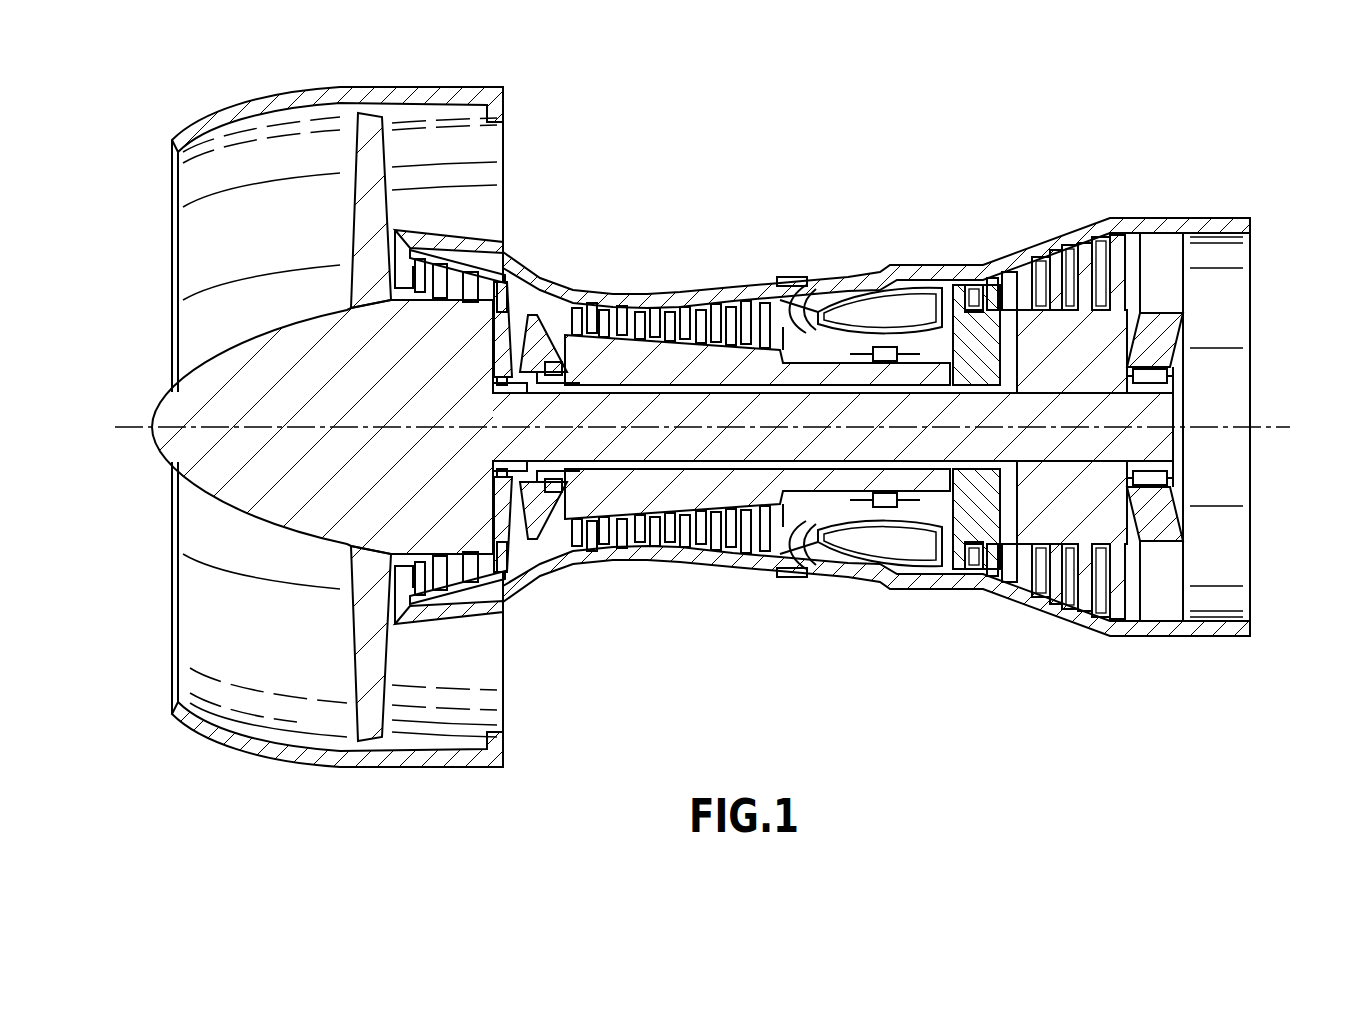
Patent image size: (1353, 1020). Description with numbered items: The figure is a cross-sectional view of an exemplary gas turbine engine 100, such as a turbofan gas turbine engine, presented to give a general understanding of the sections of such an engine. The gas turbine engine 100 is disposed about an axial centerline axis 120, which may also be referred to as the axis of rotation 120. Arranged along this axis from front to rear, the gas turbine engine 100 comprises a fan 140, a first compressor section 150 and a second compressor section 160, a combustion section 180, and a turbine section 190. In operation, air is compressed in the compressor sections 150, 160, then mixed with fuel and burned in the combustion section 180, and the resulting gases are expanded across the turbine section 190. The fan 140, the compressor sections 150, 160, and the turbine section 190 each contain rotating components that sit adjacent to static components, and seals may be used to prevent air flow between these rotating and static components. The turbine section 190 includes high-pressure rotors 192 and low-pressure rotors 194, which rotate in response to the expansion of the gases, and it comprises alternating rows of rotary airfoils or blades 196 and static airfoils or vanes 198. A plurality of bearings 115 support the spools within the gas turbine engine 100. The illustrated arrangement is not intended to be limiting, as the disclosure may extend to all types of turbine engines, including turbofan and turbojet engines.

The gas turbine engine 100 is at (978, 132).
The bearings 115 is at (553, 362).
The axial centerline axis 120 is at (133, 426).
The fan 140 is at (386, 162).
The compressor section 150 is at (392, 774).
The compressor section 160 is at (570, 582).
The combustion section 180 is at (807, 603).
The turbine section 190 is at (993, 652).
The high-pressure rotors 192 is at (990, 302).
The low-pressure rotors 194 is at (1113, 333).
The rotary airfoils or blades 196 is at (1056, 252).
The static airfoils or vanes 198 is at (1069, 250).